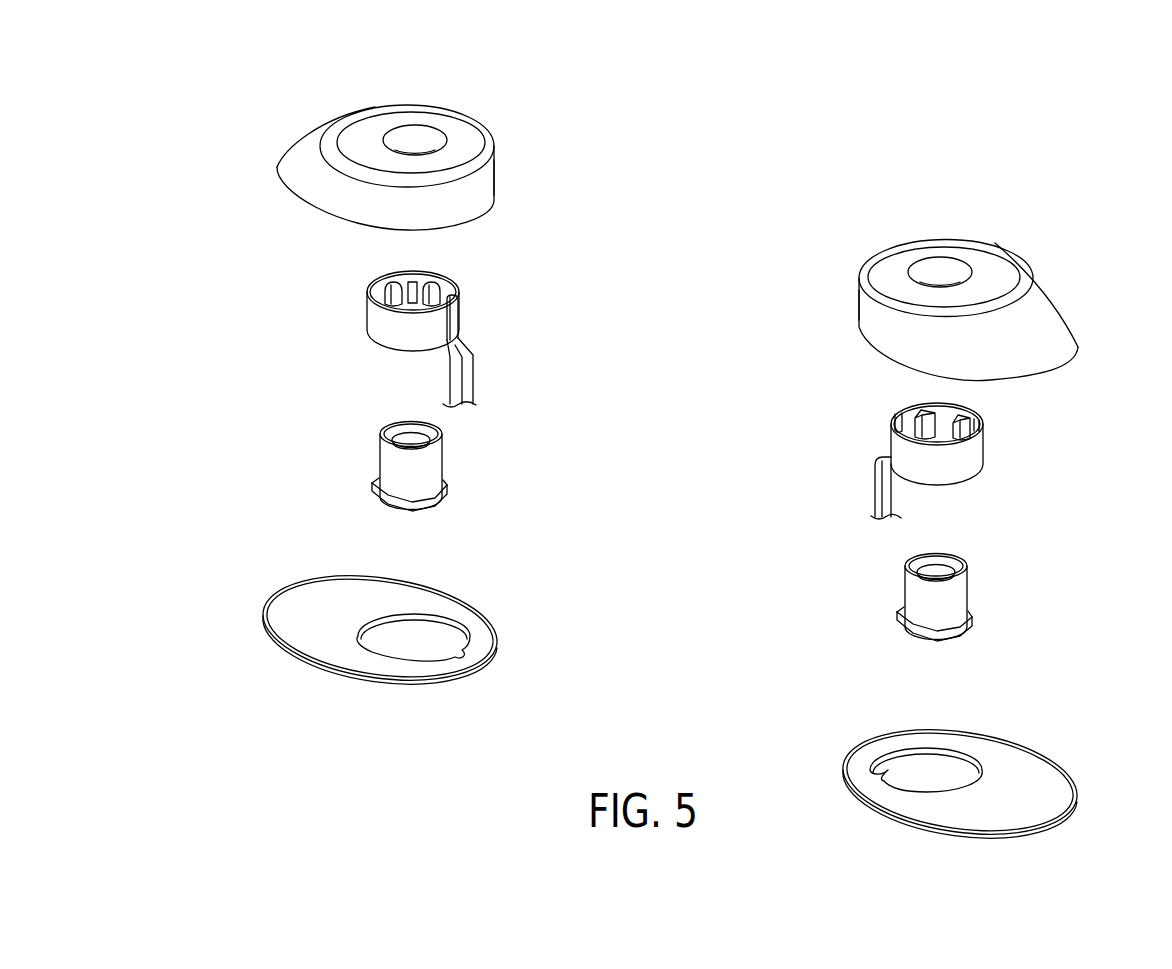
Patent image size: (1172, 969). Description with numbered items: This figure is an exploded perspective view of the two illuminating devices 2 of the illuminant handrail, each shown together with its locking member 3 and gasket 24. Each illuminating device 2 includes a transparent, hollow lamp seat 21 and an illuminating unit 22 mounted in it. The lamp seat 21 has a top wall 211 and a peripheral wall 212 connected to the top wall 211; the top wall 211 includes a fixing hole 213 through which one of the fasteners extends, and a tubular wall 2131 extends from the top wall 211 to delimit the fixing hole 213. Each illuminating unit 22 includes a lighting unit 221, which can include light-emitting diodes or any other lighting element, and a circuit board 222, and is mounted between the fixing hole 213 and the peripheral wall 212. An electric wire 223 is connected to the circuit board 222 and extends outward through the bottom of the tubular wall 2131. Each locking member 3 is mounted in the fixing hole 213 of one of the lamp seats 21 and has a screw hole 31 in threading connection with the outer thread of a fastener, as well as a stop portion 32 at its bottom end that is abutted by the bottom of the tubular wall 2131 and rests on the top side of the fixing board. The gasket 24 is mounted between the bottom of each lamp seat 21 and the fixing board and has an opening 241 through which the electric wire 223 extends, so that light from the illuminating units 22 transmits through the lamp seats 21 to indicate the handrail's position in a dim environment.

The illuminating device 2 is at (232, 63).
The lamp seat 21 is at (292, 142).
The top wall 211 is at (373, 122).
The peripheral wall 212 is at (480, 187).
The fixing hole 213 is at (422, 137).
The tubular wall 2131 is at (403, 127).
The illuminating unit 22 is at (378, 270).
The lighting unit 221 is at (430, 285).
The circuit board 222 is at (378, 325).
The electric wire 223 is at (465, 377).
The locking member 3 is at (392, 465).
The screw hole 31 is at (403, 427).
The stop portion 32 is at (442, 500).
The gasket 24 is at (313, 608).
The opening 241 is at (433, 638).